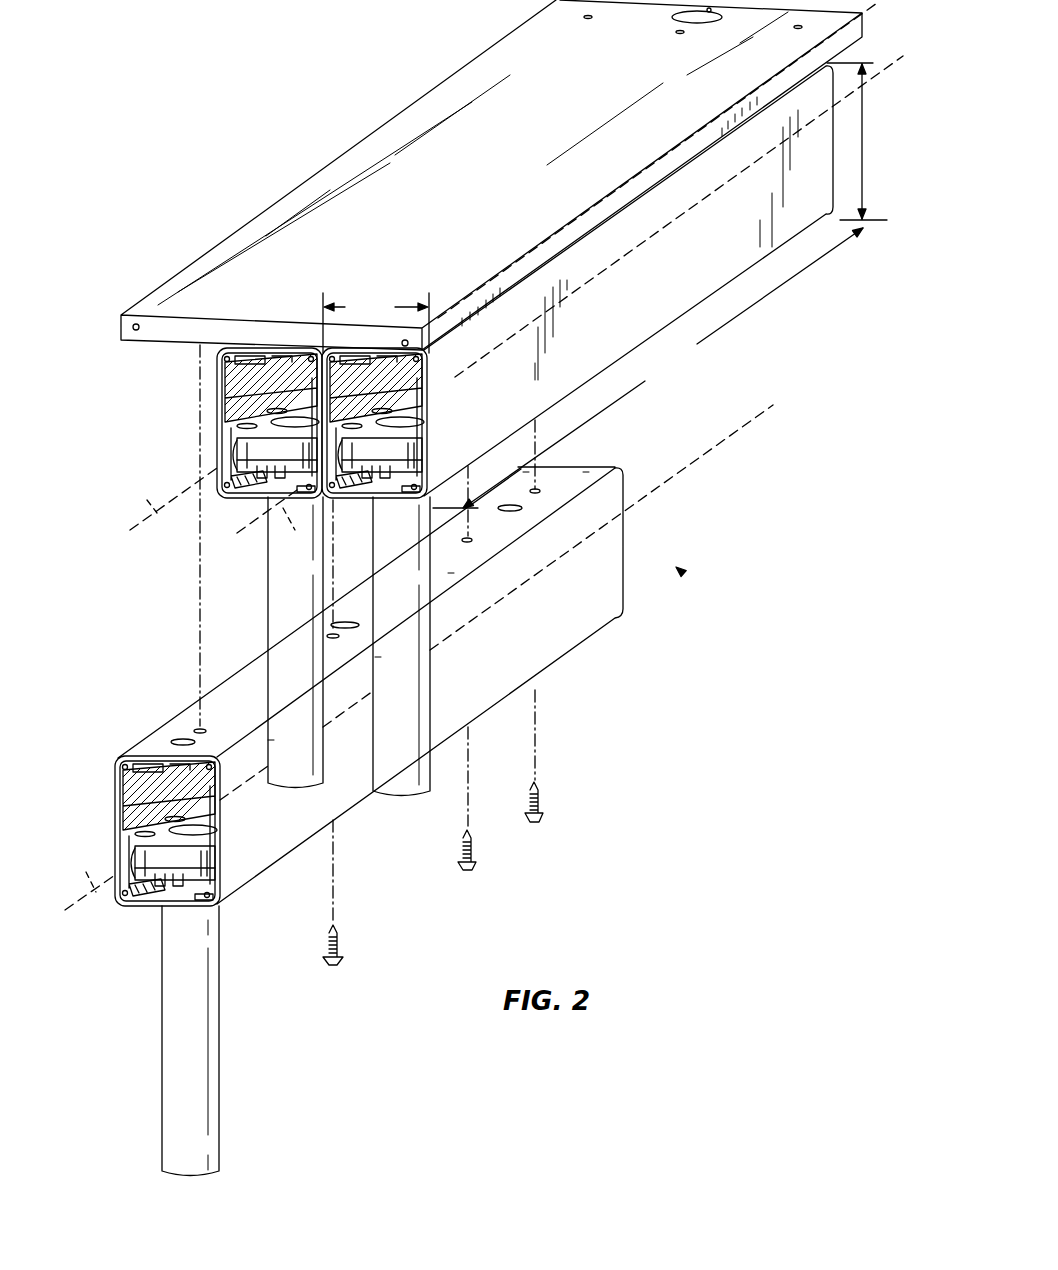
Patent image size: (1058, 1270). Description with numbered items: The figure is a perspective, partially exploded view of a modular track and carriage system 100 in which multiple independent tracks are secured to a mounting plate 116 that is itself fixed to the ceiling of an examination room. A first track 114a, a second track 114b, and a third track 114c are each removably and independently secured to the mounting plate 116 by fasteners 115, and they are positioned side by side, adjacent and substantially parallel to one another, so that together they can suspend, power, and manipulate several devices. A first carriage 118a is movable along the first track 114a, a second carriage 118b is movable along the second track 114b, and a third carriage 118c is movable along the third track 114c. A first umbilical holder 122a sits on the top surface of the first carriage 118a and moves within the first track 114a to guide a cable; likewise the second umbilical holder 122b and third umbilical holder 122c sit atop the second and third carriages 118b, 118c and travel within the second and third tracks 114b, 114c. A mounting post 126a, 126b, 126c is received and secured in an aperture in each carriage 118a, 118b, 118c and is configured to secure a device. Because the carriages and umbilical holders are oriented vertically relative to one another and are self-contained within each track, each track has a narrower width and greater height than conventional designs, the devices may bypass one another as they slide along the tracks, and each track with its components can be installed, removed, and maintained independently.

The modular track and carriage system 100 is at (479, 588).
The first track 114a is at (497, 338).
The second track 114b is at (236, 352).
The third track 114c is at (113, 784).
The fasteners 115 is at (334, 966).
The mounting plate 116 is at (488, 80).
The first carriage 118a is at (377, 487).
The second carriage 118b is at (270, 478).
The third carriage 118c is at (172, 882).
The first umbilical holder 122a is at (400, 362).
The second umbilical holder 122b is at (261, 356).
The third umbilical holder 122c is at (154, 760).
The mounting post 126a is at (413, 681).
The mounting post 126b is at (292, 777).
The mounting post 126c is at (180, 1092).